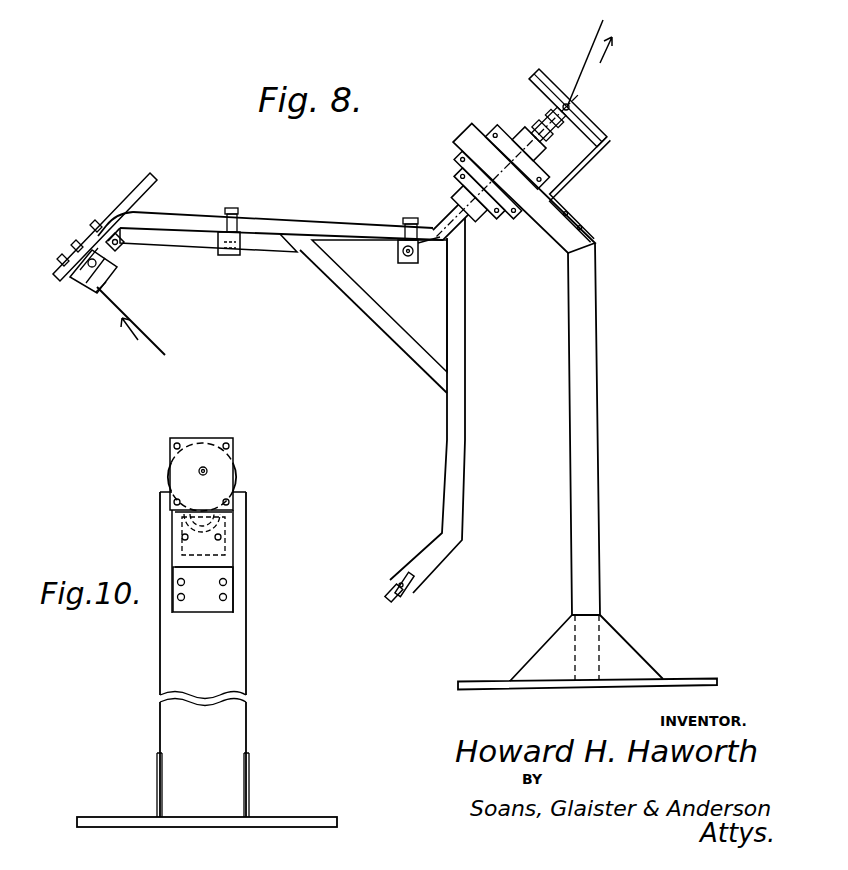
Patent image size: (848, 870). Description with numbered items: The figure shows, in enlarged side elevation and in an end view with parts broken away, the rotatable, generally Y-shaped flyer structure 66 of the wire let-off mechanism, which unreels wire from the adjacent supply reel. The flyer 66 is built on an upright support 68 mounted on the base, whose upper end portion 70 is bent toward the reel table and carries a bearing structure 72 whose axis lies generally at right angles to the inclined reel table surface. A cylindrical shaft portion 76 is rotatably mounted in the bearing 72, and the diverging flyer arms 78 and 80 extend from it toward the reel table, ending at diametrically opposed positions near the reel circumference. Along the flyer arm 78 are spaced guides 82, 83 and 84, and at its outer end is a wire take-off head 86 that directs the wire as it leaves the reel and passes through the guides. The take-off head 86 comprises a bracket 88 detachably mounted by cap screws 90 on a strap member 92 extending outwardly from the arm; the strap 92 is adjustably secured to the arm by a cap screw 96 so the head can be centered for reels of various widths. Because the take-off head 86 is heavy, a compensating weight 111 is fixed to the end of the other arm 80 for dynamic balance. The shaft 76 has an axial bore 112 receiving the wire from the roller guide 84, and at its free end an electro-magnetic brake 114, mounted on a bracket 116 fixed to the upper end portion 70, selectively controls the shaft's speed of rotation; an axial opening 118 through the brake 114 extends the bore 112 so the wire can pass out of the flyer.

In FIG. 8, the flyer structure 66 is at (478, 336).
In FIG. 8, the upright support 68 is at (600, 395).
In FIG. 10, the upright support 68 is at (243, 658).
In FIG. 8, the upper end portion 70 is at (548, 232).
In FIG. 10, the upper end portion 70 is at (233, 445).
In FIG. 8, the bearing structure 72 is at (463, 162).
In FIG. 8, the cylindrical shaft portion 76 is at (530, 122).
In FIG. 8, the flyer arm 78 is at (272, 212).
In FIG. 8, the flyer arm 80 is at (447, 462).
In FIG. 8, the guide 82 is at (124, 245).
In FIG. 8, the guide 83 is at (222, 256).
In FIG. 8, the roller guide 84 is at (408, 264).
In FIG. 8, the take-off head 86 is at (64, 288).
In FIG. 8, the bracket 88 is at (96, 309).
In FIG. 8, the cap screws 90 is at (63, 258).
In FIG. 8, the strap member 92 is at (148, 180).
In FIG. 8, the cap screw 96 is at (97, 224).
In FIG. 8, the compensating weight 111 is at (417, 605).
In FIG. 8, the axial bore 112 is at (453, 213).
In FIG. 8, the electro-magnetic brake 114 is at (537, 85).
In FIG. 10, the electro-magnetic brake 114 is at (237, 480).
In FIG. 8, the bracket 116 is at (587, 177).
In FIG. 10, the bracket 116 is at (228, 556).
In FIG. 8, the axial opening 118 is at (570, 108).
In FIG. 10, the axial opening 118 is at (199, 470).